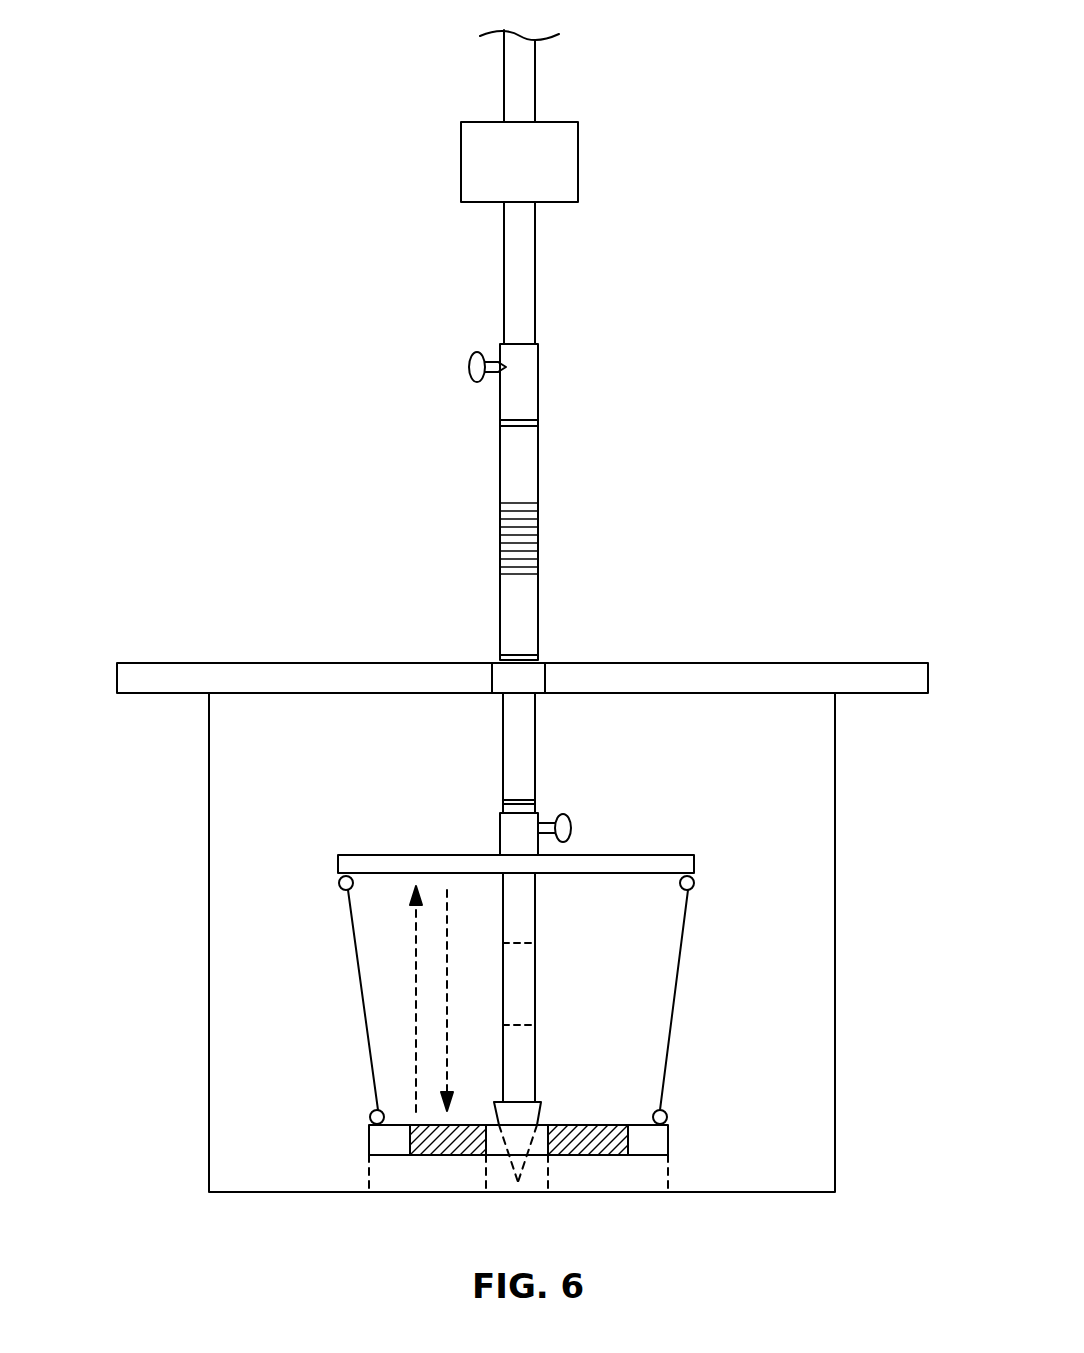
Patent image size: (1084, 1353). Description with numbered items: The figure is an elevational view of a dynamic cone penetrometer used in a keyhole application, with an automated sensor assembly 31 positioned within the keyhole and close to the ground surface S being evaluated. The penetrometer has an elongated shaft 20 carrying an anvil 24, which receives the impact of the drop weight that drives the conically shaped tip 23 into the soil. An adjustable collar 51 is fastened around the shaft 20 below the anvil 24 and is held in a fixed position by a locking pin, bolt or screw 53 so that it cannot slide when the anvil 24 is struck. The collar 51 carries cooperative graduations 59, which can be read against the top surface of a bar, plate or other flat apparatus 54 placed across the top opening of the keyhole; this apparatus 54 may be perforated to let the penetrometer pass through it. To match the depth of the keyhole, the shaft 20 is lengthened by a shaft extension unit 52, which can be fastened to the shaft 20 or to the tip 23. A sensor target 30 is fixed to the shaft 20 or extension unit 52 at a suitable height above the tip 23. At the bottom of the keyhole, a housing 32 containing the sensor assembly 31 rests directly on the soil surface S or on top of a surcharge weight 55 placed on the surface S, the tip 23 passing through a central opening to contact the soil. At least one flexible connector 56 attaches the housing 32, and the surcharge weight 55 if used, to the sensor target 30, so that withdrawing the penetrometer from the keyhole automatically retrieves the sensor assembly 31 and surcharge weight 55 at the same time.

The anvil 24 is at (580, 163).
The adjustable collar 51 is at (527, 471).
The cooperative graduations 59 is at (494, 508).
The locking pin, bolt or screw 53 is at (468, 367).
The bar, plate, or other apparatus having a flat surface 54 is at (127, 680).
The ground surface S is at (225, 1190).
The elongated shaft 20 is at (515, 735).
The sensor target 30 is at (685, 865).
The shaft extension unit 52 is at (522, 913).
The flexible connector 56 is at (360, 985).
The conically shaped tip 23 is at (500, 1180).
The housing 32 is at (660, 1140).
The sensor assembly 31 is at (578, 1137).
The surcharge weight 55 is at (365, 1172).